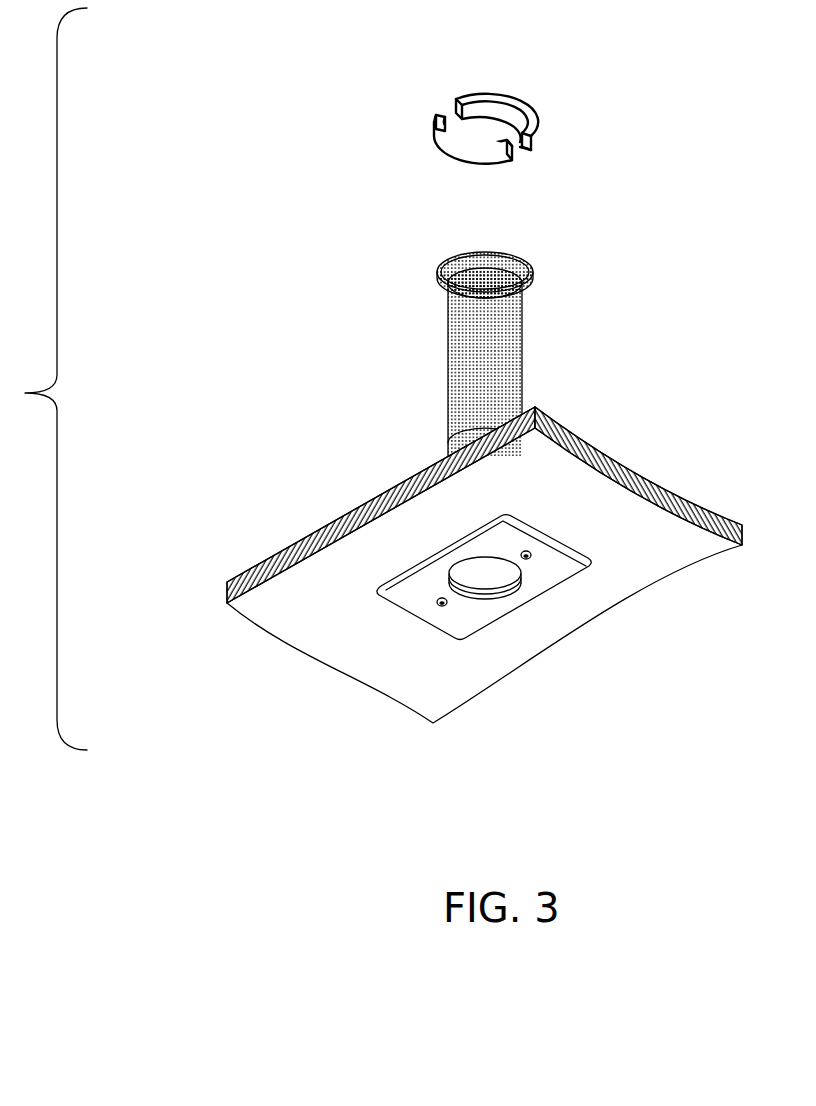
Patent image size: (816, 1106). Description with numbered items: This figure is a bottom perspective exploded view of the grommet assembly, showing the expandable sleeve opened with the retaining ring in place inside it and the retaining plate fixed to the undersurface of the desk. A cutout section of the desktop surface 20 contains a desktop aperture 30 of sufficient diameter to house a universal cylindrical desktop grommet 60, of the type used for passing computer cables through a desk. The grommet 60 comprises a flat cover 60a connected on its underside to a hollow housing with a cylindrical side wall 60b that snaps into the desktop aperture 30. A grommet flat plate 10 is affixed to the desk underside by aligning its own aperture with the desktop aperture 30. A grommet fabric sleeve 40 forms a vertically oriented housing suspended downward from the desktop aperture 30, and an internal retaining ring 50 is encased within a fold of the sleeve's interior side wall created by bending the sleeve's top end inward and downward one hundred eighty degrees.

The grommet flat plate 10 is at (567, 582).
The desktop surface 20 is at (520, 665).
The desktop aperture 30 is at (477, 567).
The grommet fabric sleeve 40 is at (523, 335).
The internal retaining ring 50 is at (440, 277).
The universal cylindrical desktop grommet 60 is at (437, 131).
The flat cover 60a is at (522, 100).
The cylindrical side wall 60b is at (488, 167).